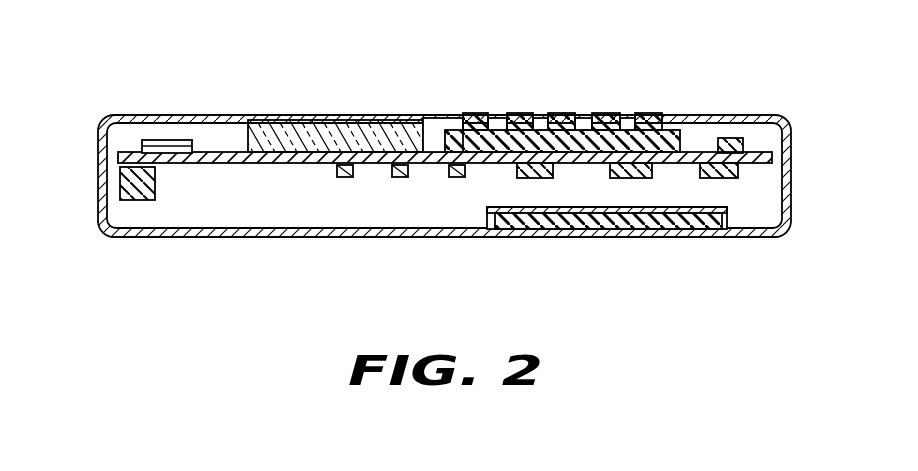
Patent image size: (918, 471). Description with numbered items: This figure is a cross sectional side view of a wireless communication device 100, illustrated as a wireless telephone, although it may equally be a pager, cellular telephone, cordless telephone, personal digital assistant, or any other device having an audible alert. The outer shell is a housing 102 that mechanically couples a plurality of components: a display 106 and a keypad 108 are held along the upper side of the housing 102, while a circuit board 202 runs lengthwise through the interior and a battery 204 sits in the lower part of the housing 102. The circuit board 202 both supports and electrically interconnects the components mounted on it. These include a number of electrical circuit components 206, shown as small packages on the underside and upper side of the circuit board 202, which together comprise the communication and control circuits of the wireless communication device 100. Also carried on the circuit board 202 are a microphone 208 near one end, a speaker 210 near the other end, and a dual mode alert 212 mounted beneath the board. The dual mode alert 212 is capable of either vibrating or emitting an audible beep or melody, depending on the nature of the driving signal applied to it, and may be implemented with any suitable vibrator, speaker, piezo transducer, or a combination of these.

The wireless communication device 100 is at (713, 269).
The housing 102 is at (792, 143).
The display 106 is at (375, 120).
The keypad 108 is at (469, 113).
The circuit board 202 is at (199, 164).
The battery 204 is at (542, 236).
The electrical circuit components 206 is at (344, 177).
The microphone 208 is at (734, 138).
The speaker 210 is at (181, 140).
The dual mode alert 212 is at (120, 183).